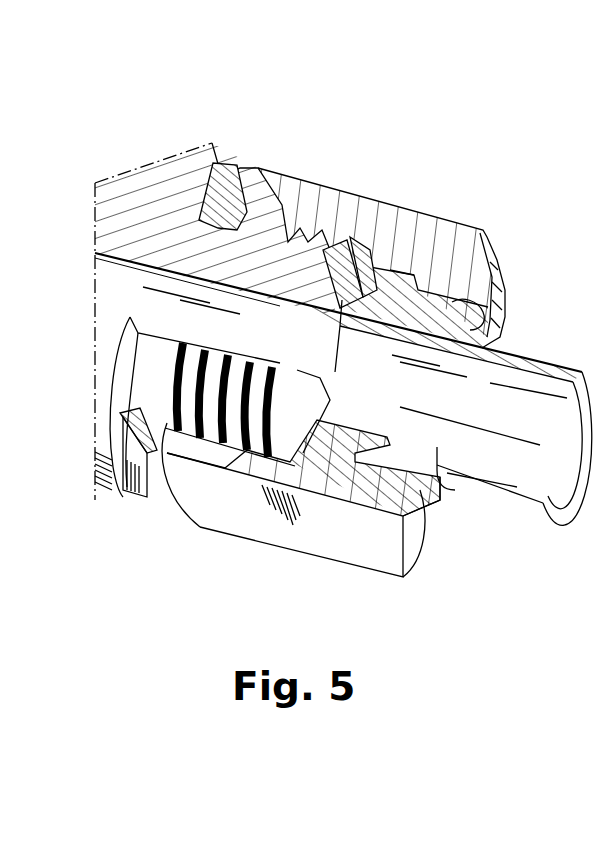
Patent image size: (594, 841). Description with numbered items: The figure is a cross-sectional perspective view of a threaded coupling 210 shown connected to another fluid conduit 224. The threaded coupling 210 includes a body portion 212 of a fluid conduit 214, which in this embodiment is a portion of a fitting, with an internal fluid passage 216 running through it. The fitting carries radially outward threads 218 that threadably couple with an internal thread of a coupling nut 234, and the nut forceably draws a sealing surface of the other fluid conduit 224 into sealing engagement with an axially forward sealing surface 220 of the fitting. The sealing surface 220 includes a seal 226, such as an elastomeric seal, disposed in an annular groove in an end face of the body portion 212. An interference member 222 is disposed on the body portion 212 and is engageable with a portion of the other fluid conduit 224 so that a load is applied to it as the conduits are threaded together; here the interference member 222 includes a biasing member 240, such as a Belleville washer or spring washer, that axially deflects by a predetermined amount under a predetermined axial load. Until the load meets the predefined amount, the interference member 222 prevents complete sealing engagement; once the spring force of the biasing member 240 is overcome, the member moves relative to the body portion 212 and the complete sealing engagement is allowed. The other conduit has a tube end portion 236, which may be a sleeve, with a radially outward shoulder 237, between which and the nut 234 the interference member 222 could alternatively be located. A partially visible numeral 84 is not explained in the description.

The threaded coupling 210 is at (92, 143).
The body portion 212 is at (135, 221).
The fluid conduit 214 is at (169, 162).
The internal fluid passage 216 is at (110, 293).
The threads 218 is at (232, 430).
The sealing surface 220 is at (398, 283).
The interference member 222 is at (252, 163).
The other fluid conduit 224 is at (472, 522).
The seal 226 is at (353, 312).
The coupling nut 234 is at (290, 525).
The tube end portion 236 is at (452, 308).
The radially outward shoulder 237 is at (392, 274).
The biasing member 240 is at (147, 493).
The truncated numeral 84 is at (14, 581).